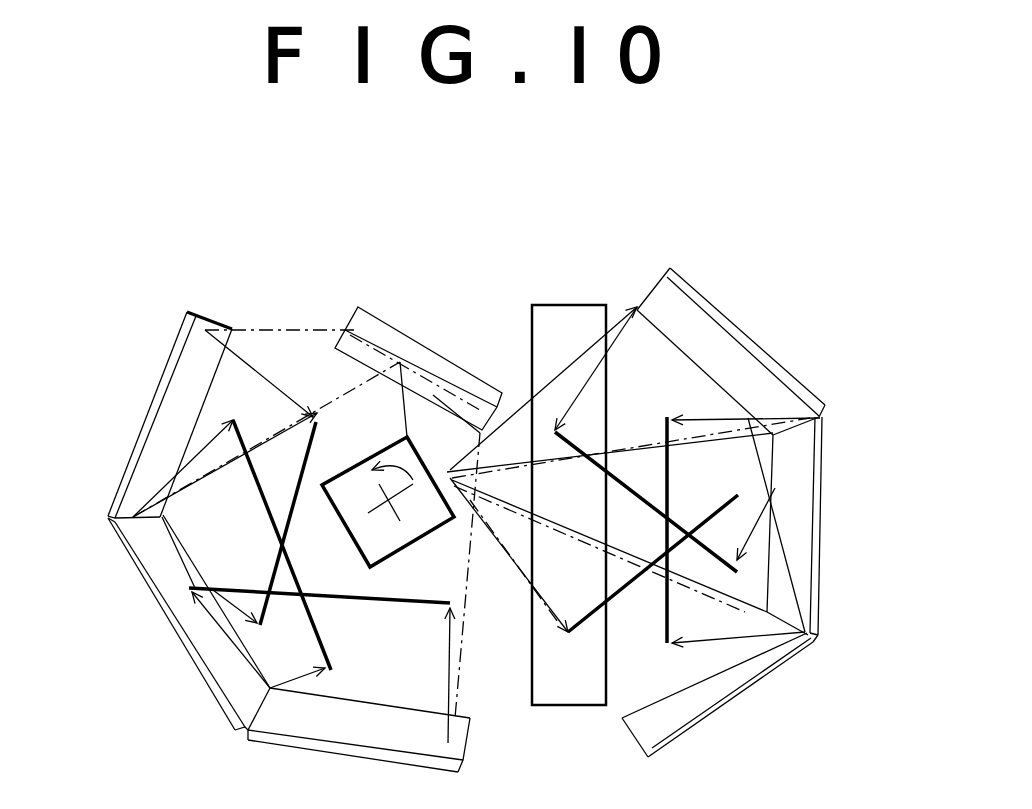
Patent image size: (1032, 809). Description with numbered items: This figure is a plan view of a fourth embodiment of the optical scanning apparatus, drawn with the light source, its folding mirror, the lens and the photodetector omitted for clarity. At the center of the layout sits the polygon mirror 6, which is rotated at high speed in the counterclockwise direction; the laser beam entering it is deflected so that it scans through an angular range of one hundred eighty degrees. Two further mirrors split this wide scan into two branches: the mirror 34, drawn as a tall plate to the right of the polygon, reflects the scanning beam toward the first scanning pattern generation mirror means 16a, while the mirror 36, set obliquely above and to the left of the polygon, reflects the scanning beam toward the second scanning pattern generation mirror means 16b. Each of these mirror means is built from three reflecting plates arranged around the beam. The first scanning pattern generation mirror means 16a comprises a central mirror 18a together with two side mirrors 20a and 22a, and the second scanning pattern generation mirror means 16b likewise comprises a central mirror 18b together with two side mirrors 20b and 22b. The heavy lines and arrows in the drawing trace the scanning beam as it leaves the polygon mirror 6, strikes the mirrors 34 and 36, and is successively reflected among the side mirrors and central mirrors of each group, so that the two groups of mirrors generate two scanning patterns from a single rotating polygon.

The polygon mirror 6 is at (412, 545).
The mirror 34 is at (563, 305).
The mirror 36 is at (398, 325).
The side mirror 20a is at (733, 323).
The side mirror 20b is at (171, 352).
The first scanning pattern generation mirror means 16a is at (830, 514).
The second scanning pattern generation mirror means 16b is at (143, 585).
The central mirror 18a is at (822, 582).
The central mirror 18b is at (180, 643).
The side mirror 22a is at (718, 712).
The side mirror 22b is at (337, 752).